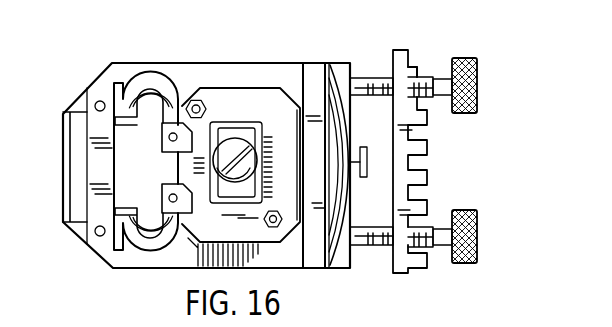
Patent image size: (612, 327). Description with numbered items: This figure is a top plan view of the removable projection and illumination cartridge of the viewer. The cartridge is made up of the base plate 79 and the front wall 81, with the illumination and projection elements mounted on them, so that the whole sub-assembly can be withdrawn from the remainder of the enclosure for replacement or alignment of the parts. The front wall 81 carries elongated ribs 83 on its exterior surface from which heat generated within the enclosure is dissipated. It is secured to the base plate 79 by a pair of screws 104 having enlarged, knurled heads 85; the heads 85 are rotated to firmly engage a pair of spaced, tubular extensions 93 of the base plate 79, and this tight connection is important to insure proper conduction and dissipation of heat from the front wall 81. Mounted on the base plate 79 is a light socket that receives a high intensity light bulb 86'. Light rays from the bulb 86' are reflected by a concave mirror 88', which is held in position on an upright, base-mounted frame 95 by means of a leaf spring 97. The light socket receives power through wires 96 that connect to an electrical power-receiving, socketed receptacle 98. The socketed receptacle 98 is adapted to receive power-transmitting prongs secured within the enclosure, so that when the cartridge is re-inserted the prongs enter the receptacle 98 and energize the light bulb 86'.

The base plate 79 is at (258, 85).
The front wall 81 is at (412, 62).
The elongated ribs 83 is at (418, 70).
The knurled heads 85 is at (477, 71).
The high intensity light bulb 86' is at (233, 123).
The concave mirror 88' is at (355, 136).
The tubular extensions 93 is at (364, 77).
The upright, base-mounted frame 95 is at (315, 72).
The wires 96 is at (137, 78).
The leaf spring 97 is at (366, 160).
The socketed receptacle 98 is at (76, 200).
The screws 104 is at (428, 97).